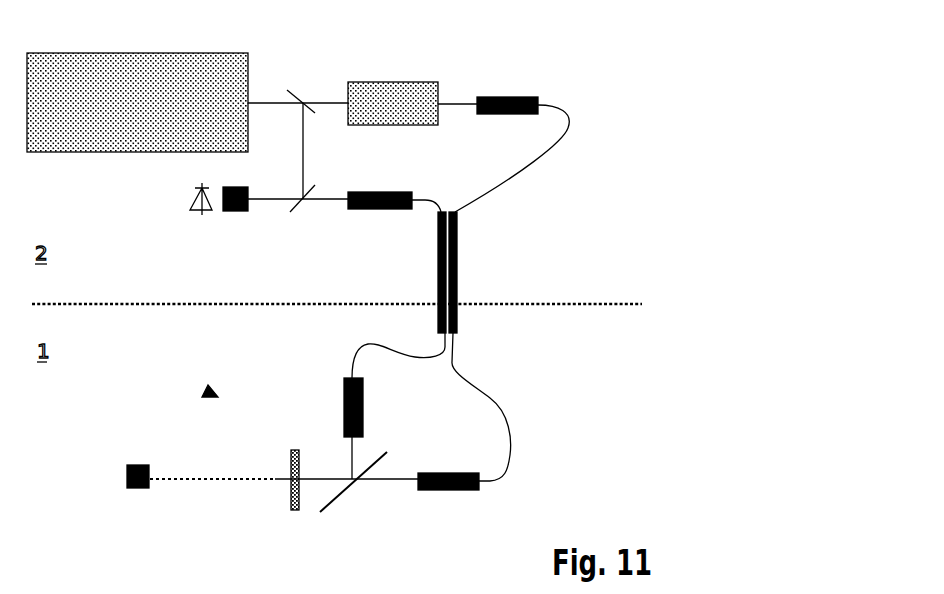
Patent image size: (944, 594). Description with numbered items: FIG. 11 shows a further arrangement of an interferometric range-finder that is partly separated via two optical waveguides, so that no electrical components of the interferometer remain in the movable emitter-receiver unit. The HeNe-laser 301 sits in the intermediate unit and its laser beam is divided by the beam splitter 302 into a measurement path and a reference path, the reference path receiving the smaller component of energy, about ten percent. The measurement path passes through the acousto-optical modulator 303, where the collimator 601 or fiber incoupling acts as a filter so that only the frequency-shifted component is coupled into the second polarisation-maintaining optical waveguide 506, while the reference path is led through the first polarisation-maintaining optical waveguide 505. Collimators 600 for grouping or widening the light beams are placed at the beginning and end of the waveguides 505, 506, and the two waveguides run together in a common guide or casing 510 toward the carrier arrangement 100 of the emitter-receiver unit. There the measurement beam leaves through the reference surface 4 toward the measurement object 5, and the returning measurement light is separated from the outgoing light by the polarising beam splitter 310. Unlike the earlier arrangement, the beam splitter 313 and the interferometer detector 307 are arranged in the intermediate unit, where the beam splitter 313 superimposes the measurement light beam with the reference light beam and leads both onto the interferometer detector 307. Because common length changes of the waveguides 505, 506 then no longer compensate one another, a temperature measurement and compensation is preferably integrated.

The reference surface 4 is at (296, 450).
The measurement object 5 is at (127, 475).
The carrier arrangement 100 is at (208, 386).
The HeNe-laser 301 is at (87, 153).
The beam splitter 302 is at (300, 101).
The acousto-optical modulator 303 is at (438, 84).
The interferometer detector 307 is at (231, 212).
The polarising beam splitter 310 is at (356, 490).
The beam splitter 313 is at (311, 215).
The first polarisation-maintaining optical waveguide 505 is at (350, 346).
The second polarisation-maintaining optical waveguide 506 is at (500, 410).
The common guide or casing 510 is at (460, 236).
The collimators 600 is at (403, 192).
The collimator 601 is at (527, 94).